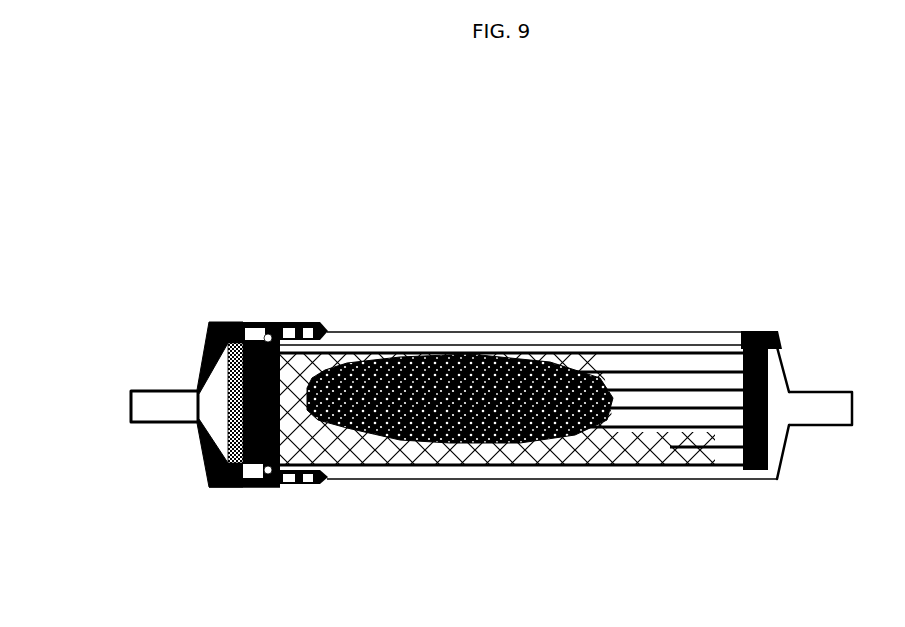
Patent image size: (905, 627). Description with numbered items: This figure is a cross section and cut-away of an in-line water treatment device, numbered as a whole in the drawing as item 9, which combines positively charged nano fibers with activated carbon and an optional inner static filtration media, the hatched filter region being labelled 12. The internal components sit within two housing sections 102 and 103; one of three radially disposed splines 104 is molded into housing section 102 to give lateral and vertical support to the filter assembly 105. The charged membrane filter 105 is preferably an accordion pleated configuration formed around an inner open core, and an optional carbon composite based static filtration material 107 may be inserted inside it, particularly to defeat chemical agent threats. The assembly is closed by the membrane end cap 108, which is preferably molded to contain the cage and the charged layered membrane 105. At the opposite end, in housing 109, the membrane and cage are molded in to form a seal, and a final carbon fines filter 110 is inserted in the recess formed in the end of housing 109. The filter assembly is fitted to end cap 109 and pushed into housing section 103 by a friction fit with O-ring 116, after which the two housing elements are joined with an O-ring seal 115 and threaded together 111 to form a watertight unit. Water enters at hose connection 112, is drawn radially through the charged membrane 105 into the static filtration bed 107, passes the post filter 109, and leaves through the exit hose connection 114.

The filter cartridge housing 9 is at (412, 481).
The filter medium 12 is at (553, 485).
The housing section 102 is at (740, 332).
The housing section 103 is at (258, 322).
The spline 104 is at (770, 332).
The charged membrane filter 105 is at (680, 353).
The static filtration material 107 is at (512, 355).
The membrane end cap 108 is at (795, 377).
The housing 109 is at (205, 485).
The carbon fines filter 110 is at (198, 333).
The threaded connection 111 is at (313, 322).
The hose connection 112 is at (855, 427).
The exit hose connection 114 is at (128, 400).
The O-ring seal 115 is at (265, 485).
The O-ring 116 is at (232, 322).